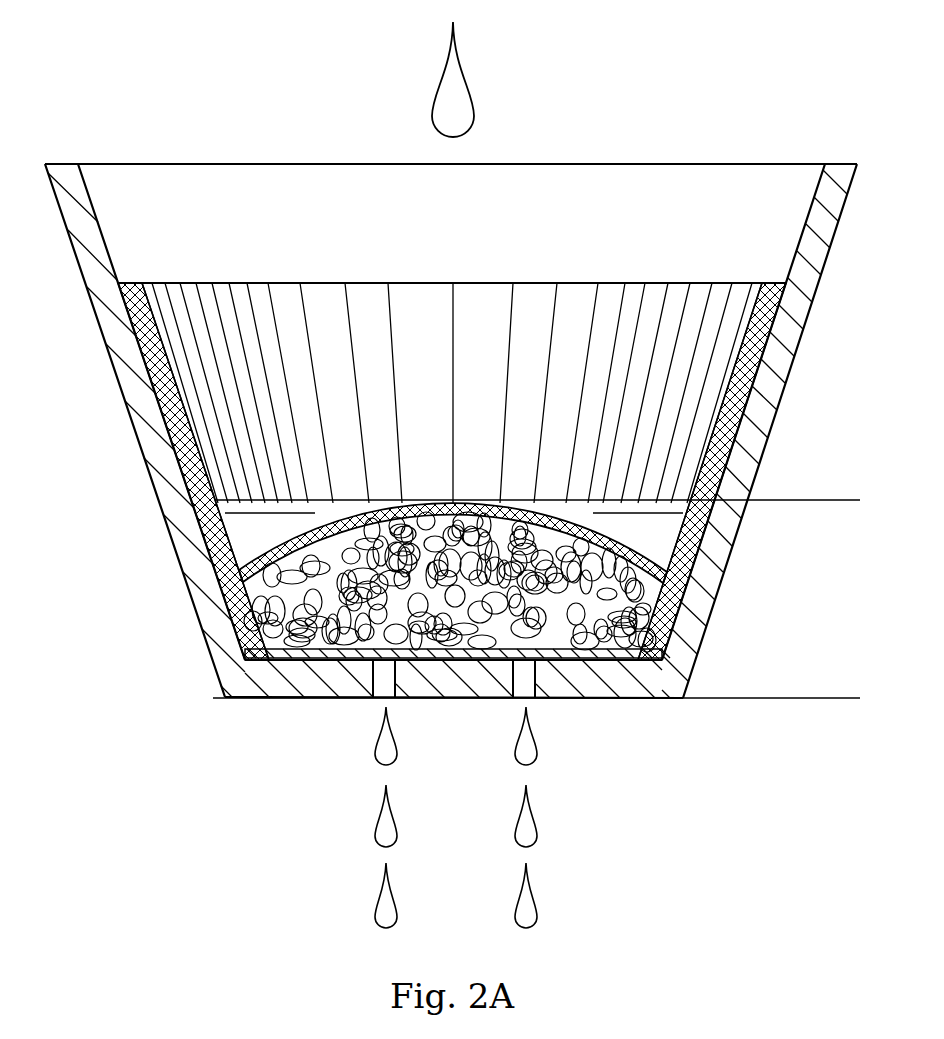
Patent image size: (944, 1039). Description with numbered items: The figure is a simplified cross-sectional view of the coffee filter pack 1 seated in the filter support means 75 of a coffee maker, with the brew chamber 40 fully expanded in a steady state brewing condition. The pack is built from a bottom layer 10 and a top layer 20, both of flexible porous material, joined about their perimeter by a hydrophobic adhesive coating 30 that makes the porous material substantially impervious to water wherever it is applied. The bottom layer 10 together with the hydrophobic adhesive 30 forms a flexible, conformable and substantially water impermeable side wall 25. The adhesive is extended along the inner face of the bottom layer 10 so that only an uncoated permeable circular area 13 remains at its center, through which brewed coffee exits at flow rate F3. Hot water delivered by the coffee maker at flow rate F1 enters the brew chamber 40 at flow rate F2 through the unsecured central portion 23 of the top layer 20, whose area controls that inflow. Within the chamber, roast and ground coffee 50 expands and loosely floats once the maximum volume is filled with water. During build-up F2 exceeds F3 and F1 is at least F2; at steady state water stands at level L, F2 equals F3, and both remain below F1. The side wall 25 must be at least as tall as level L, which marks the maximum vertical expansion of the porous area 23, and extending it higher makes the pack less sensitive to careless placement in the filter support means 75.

The coffee filter pack 1 is at (687, 138).
The bottom layer 10 is at (163, 408).
The permeable circular area 13 is at (405, 655).
The top layer 20 is at (168, 363).
The unsecured central portion of top layer 23 is at (473, 505).
The side wall 25 is at (736, 315).
The hydrophobic adhesive coating 30 is at (170, 365).
The brew chamber 40 is at (245, 647).
The roast and ground coffee 50 is at (672, 698).
The filter support means 75 is at (773, 377).
The water delivery flow rate F1 is at (486, 102).
The incoming hot water flow rate F2 is at (292, 501).
The brewed coffee exit flow rate F3 is at (386, 672).
The water level L is at (840, 518).